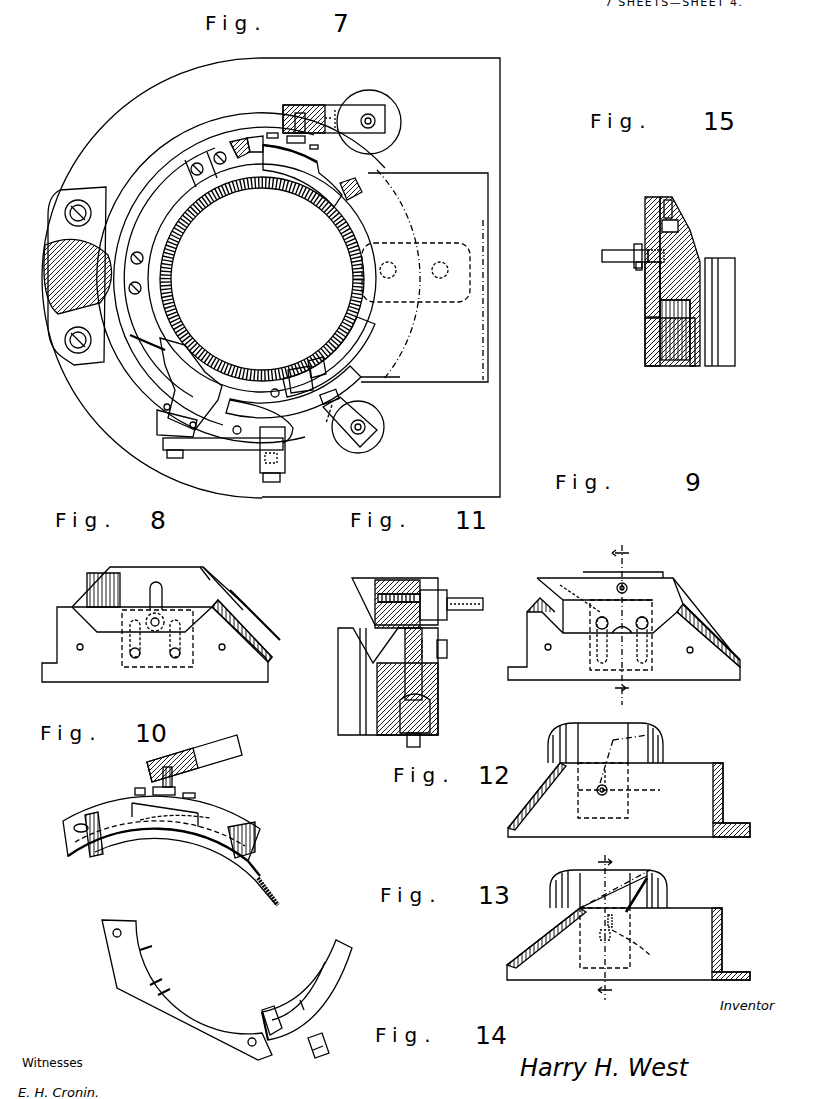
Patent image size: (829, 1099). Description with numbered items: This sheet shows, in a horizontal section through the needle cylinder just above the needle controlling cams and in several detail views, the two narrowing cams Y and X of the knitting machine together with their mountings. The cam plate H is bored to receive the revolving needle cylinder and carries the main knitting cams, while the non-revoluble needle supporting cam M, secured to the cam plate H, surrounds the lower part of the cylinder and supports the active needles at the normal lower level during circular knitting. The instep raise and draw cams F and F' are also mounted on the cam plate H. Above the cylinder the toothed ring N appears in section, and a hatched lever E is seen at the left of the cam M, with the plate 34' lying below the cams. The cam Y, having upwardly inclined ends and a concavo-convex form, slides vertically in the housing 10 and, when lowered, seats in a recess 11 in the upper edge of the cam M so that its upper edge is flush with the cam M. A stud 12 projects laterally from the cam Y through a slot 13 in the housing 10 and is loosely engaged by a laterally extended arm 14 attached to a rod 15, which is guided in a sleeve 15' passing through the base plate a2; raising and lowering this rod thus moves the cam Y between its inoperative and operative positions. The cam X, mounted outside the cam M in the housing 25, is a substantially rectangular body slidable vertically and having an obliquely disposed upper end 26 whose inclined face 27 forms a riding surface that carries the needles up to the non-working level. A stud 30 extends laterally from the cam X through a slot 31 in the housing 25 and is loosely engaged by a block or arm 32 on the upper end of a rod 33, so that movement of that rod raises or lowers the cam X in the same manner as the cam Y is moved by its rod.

In FIG. 7, the base plate a2 is at (455, 66).
In FIG. 7, the housing 10 is at (227, 158).
In FIG. 8, the housing 10 is at (216, 603).
In FIG. 11, the housing 10 is at (430, 684).
In FIG. 9, the housing 10 is at (700, 610).
In FIG. 10, the housing 10 is at (240, 820).
In FIG. 8, the recess 11 is at (108, 642).
In FIG. 11, the recess 11 is at (368, 650).
In FIG. 9, the recess 11 is at (565, 655).
In FIG. 7, the stud 12 is at (300, 113).
In FIG. 8, the stud 12 is at (163, 618).
In FIG. 11, the stud 12 is at (462, 604).
In FIG. 9, the stud 12 is at (626, 586).
In FIG. 10, the stud 12 is at (158, 770).
In FIG. 8, the slot 13 is at (157, 592).
In FIG. 11, the slot 13 is at (440, 640).
In FIG. 9, the slot 13 is at (582, 582).
In FIG. 7, the laterally extended arm 14 is at (352, 118).
In FIG. 10, the laterally extended arm 14 is at (230, 762).
In FIG. 7, the rod 15 is at (393, 122).
In FIG. 13, the rod 15 is at (608, 927).
In FIG. 7, the sleeve 15' is at (402, 128).
In FIG. 7, the housing 25 is at (355, 360).
In FIG. 12, the housing 25 is at (660, 758).
In FIG. 13, the housing 25 is at (660, 878).
In FIG. 15, the housing 25 is at (645, 210).
In FIG. 7, the obliquely disposed upper end 26 is at (288, 375).
In FIG. 13, the obliquely disposed upper end 26 is at (642, 900).
In FIG. 14, the obliquely disposed upper end 26 is at (265, 1020).
In FIG. 15, the obliquely disposed upper end 26 is at (692, 225).
In FIG. 7, the inclined face 27 is at (318, 355).
In FIG. 12, the inclined face 27 is at (600, 775).
In FIG. 13, the inclined face 27 is at (596, 900).
In FIG. 14, the inclined face 27 is at (308, 1000).
In FIG. 15, the inclined face 27 is at (680, 205).
In FIG. 7, the stud 30 is at (326, 428).
In FIG. 12, the stud 30 is at (596, 790).
In FIG. 13, the stud 30 is at (648, 949).
In FIG. 14, the stud 30 is at (315, 1058).
In FIG. 15, the stud 30 is at (612, 263).
In FIG. 12, the slot 31 is at (655, 728).
In FIG. 13, the slot 31 is at (540, 935).
In FIG. 15, the slot 31 is at (650, 296).
In FIG. 7, the block or arm 32 is at (370, 422).
In FIG. 7, the rod 33 is at (372, 440).
In FIG. 7, the plate 34' is at (224, 454).
In FIG. 7, the lever E is at (50, 315).
In FIG. 7, the instep raise cam F is at (162, 382).
In FIG. 7, the instep draw cam F' is at (127, 437).
In FIG. 7, the cam plate H is at (430, 184).
In FIG. 7, the needle supporting cam M is at (175, 200).
In FIG. 8, the needle supporting cam M is at (250, 650).
In FIG. 11, the needle supporting cam M is at (352, 700).
In FIG. 9, the needle supporting cam M is at (718, 655).
In FIG. 12, the needle supporting cam M is at (705, 812).
In FIG. 13, the needle supporting cam M is at (700, 942).
In FIG. 10, the needle supporting cam M is at (296, 884).
In FIG. 14, the needle supporting cam M is at (150, 965).
In FIG. 15, the needle supporting cam M is at (725, 325).
In FIG. 7, the toothed ring N is at (288, 182).
In FIG. 7, the cam X is at (308, 300).
In FIG. 12, the cam X is at (626, 790).
In FIG. 13, the cam X is at (640, 888).
In FIG. 14, the cam X is at (312, 975).
In FIG. 15, the cam X is at (705, 246).
In FIG. 7, the cam Y is at (248, 140).
In FIG. 8, the cam Y is at (96, 618).
In FIG. 11, the cam Y is at (392, 598).
In FIG. 9, the cam Y is at (660, 585).
In FIG. 10, the cam Y is at (150, 835).